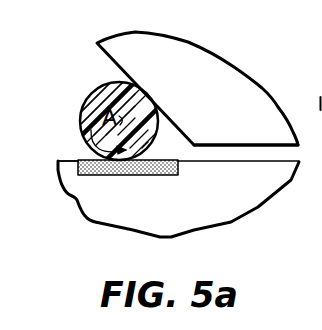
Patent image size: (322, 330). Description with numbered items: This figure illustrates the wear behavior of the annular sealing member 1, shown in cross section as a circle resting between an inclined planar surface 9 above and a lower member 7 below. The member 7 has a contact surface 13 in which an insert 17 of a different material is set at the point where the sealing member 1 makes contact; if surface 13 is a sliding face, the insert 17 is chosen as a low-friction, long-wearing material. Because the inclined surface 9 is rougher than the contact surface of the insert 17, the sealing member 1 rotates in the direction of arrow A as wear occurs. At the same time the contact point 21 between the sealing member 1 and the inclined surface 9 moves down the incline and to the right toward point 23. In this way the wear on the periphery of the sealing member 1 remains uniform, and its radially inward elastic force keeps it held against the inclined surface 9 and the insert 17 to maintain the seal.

The sealing member 1 is at (81, 105).
The member 7 is at (251, 210).
The inclined planar surface 9 is at (99, 62).
The surface 13 is at (84, 160).
The insert 17 is at (140, 176).
The contact point 21 is at (140, 89).
The point 23 is at (245, 127).